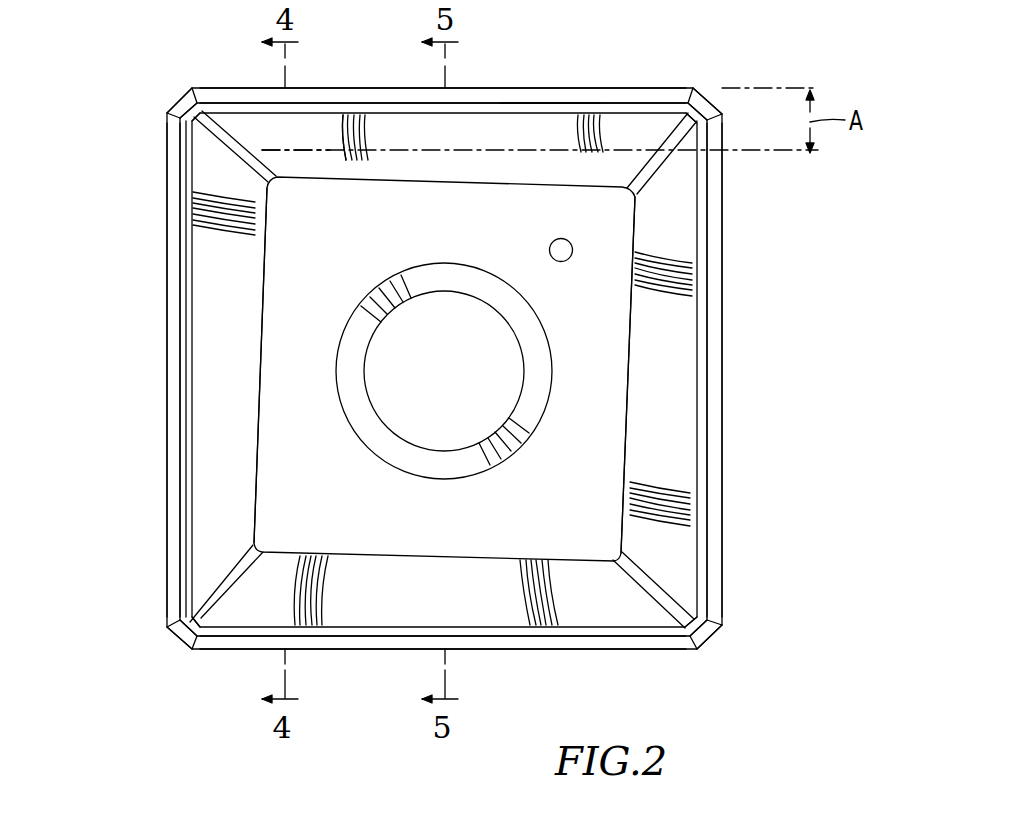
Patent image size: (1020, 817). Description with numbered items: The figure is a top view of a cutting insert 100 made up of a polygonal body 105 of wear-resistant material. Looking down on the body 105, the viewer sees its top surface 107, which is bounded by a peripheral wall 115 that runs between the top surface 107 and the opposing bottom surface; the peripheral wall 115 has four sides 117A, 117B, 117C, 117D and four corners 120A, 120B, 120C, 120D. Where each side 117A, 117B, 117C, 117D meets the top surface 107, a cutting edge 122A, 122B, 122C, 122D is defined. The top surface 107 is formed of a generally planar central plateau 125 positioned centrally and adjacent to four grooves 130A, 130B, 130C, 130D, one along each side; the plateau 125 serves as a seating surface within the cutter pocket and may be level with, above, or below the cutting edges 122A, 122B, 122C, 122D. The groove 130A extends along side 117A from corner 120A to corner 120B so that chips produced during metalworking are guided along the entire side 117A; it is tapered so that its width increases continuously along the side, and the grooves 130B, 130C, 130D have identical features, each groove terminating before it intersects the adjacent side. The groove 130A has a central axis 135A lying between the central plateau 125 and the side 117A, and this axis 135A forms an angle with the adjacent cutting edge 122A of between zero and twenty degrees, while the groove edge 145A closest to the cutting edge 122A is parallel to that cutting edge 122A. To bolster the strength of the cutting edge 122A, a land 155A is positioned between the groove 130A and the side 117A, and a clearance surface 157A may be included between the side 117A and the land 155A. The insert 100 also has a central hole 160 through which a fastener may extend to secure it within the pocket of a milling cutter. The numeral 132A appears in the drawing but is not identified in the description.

The cutting insert 100 is at (142, 414).
The polygonal body 105 is at (722, 422).
The top surface 107 is at (593, 365).
The peripheral wall 115 is at (722, 540).
The side 117A is at (578, 88).
The side 117B is at (722, 280).
The side 117C is at (625, 649).
The side 117D is at (168, 255).
The corner 120A is at (175, 103).
The corner 120B is at (706, 96).
The corner 120C is at (712, 640).
The corner 120D is at (180, 650).
The cutting edge 122A is at (643, 103).
The cutting edge 122B is at (708, 222).
The cutting edge 122C is at (367, 637).
The cutting edge 122D is at (178, 171).
The central plateau 125 is at (273, 497).
The groove 130A is at (492, 148).
The groove 130B is at (665, 372).
The groove 130C is at (492, 600).
The groove 130D is at (222, 336).
The chip breaker groove 132A is at (305, 140).
The central axis 135A is at (798, 157).
The groove edge 145A is at (372, 130).
The land 155A is at (548, 103).
The clearance surface 157A is at (527, 95).
The central hole 160 is at (432, 435).